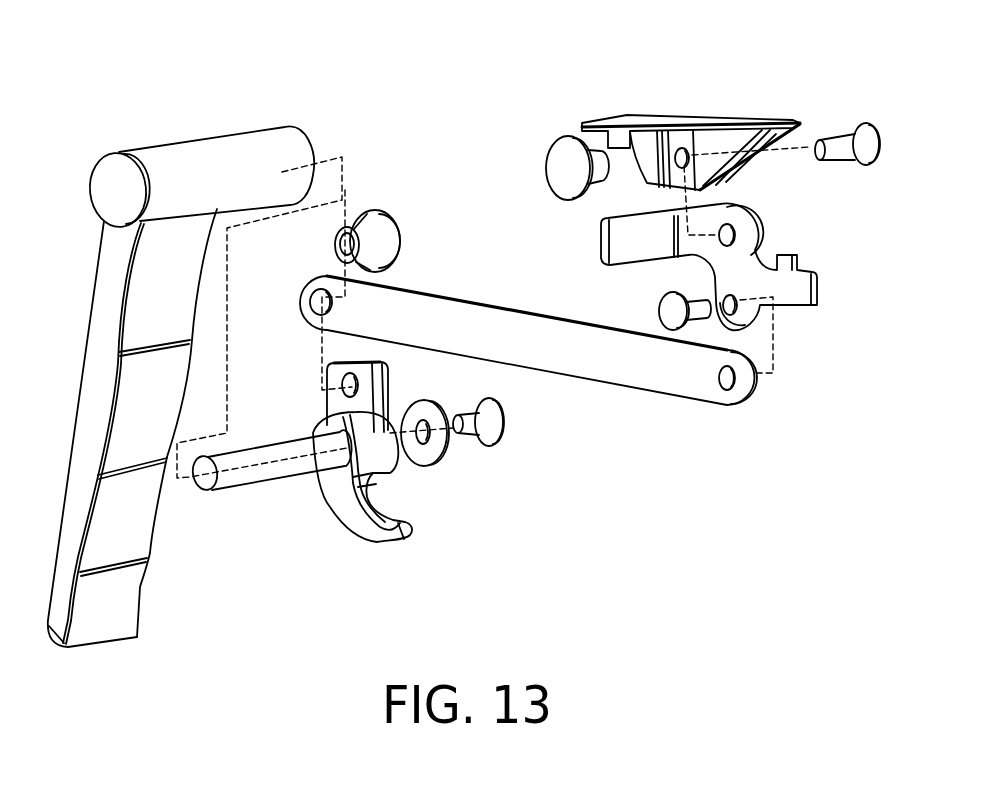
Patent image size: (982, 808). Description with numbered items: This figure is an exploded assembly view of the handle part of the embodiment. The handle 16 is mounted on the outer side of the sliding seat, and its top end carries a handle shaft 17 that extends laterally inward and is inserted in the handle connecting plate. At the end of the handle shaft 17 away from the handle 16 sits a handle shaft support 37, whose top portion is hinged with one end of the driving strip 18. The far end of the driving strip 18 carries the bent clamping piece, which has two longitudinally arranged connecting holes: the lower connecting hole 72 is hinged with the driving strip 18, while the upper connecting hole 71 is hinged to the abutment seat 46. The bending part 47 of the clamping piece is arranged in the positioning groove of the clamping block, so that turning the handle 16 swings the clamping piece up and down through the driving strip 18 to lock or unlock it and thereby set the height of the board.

The handle 16 is at (130, 521).
The handle shaft 17 is at (263, 473).
The driving strip 18 is at (480, 336).
The handle shaft support 37 is at (382, 465).
The abutment seat 46 is at (708, 140).
The bending part 47 is at (647, 285).
The upper connecting hole 71 is at (748, 230).
The lower connecting hole 72 is at (752, 314).